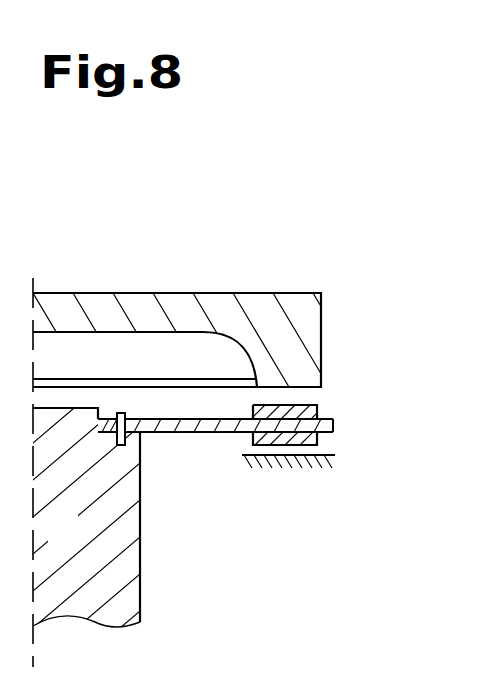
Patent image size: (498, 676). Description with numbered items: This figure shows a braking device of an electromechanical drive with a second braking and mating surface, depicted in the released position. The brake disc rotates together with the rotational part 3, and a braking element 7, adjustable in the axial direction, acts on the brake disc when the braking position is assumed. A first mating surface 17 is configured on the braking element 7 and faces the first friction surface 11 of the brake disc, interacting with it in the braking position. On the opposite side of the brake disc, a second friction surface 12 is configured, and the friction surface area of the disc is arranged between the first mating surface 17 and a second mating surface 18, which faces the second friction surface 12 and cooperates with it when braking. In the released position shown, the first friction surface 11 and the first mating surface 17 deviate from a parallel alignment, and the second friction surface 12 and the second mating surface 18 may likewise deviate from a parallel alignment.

The rotational part 3 is at (72, 548).
The braking element 7 is at (323, 310).
The first friction surface 11 is at (264, 403).
The second friction surface 12 is at (272, 445).
The first mating surface 17 is at (292, 386).
The second mating surface 18 is at (305, 456).